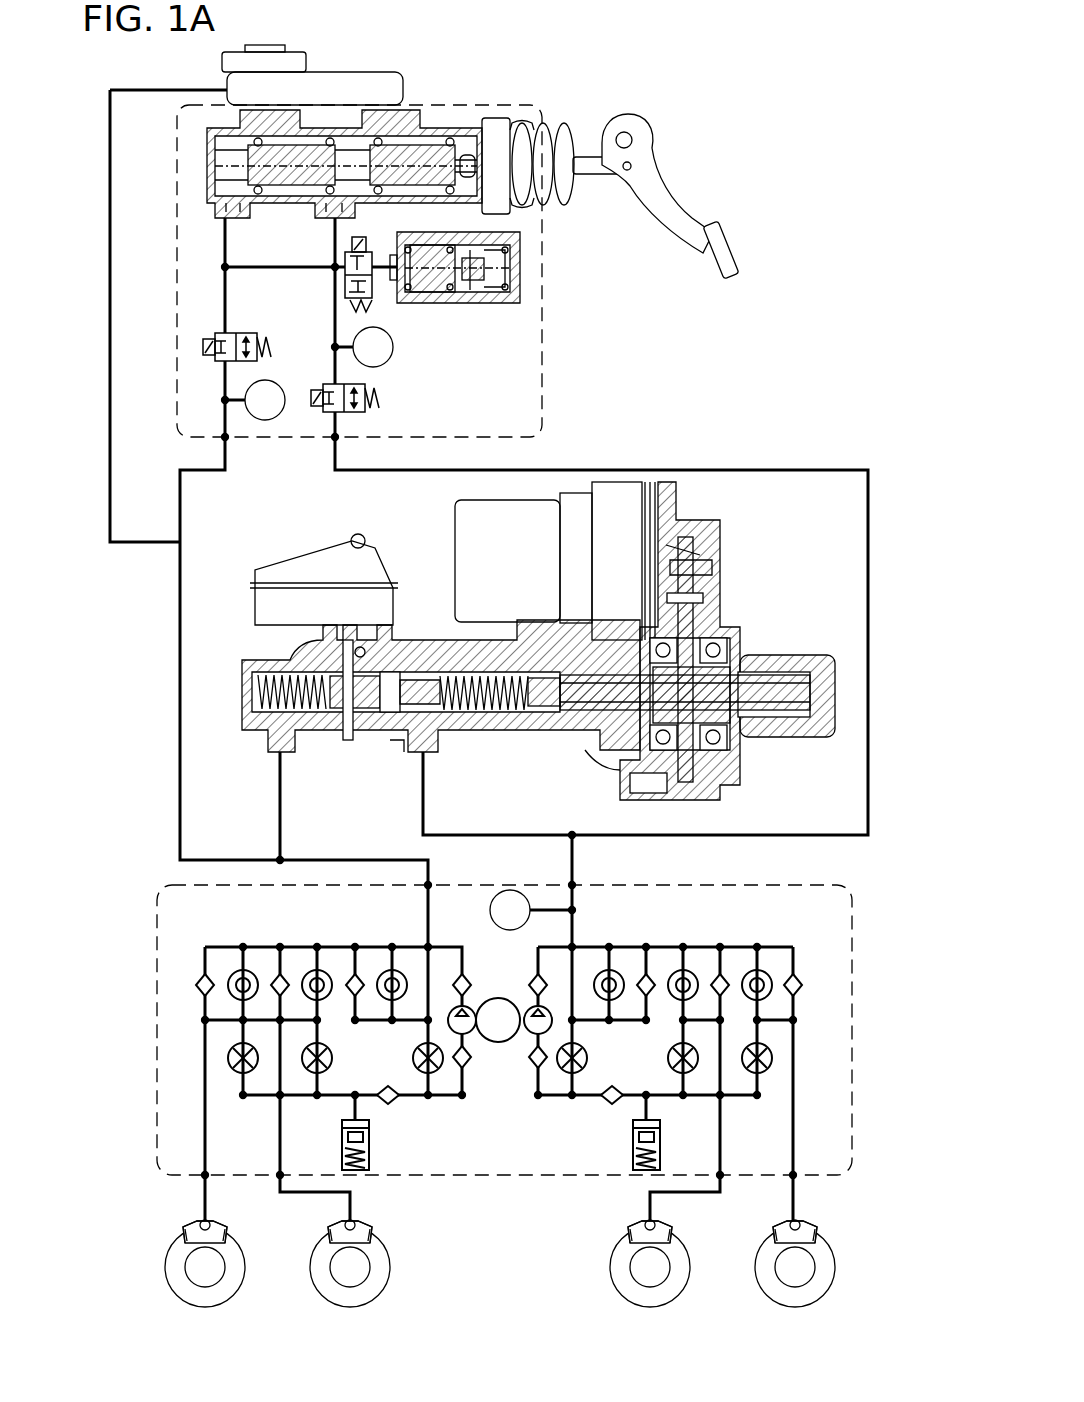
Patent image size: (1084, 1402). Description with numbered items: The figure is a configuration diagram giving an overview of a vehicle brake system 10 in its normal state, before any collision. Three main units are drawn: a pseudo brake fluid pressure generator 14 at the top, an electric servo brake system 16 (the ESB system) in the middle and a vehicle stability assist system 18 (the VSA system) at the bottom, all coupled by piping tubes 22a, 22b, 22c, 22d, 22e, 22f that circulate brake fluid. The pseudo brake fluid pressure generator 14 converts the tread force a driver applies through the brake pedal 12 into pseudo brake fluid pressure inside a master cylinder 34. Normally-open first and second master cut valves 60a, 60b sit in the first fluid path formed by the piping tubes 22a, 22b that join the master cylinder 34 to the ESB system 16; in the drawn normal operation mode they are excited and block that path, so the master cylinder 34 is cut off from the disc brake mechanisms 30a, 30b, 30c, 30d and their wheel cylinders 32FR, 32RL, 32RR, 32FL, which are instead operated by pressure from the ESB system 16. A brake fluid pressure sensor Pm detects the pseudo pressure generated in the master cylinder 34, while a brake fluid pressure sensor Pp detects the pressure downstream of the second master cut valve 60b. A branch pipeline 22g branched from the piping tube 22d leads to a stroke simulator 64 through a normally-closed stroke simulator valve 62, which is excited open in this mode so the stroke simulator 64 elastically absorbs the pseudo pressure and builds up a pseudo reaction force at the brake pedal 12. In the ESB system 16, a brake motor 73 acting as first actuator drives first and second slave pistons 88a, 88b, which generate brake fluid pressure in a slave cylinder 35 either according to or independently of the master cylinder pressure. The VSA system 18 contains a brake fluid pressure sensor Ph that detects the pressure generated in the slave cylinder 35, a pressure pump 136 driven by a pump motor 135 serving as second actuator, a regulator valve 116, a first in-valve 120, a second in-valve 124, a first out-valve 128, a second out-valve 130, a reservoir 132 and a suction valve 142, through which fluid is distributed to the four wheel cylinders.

The vehicle brake system 10 is at (660, 92).
The brake pedal 12 is at (735, 242).
The pseudo brake fluid pressure generator 14 is at (545, 335).
The electric servo brake system 16 is at (714, 520).
The vehicle stability assist system 18 is at (735, 883).
The master cylinder 34 is at (440, 125).
The slave cylinder 35 is at (438, 625).
The brake motor 73 is at (555, 561).
The piping tube 22a is at (333, 330).
The piping tube 22b is at (472, 835).
The piping tube 22c is at (575, 856).
The piping tube 22d is at (222, 302).
The piping tube 22e is at (278, 812).
The piping tube 22f is at (352, 858).
The branch pipeline 22g is at (276, 266).
The first master cut valve 60a is at (367, 398).
The second master cut valve 60b is at (240, 333).
The stroke simulator valve 62 is at (366, 258).
The stroke simulator 64 is at (524, 257).
The first slave piston 88a is at (600, 748).
The second slave piston 88b is at (392, 748).
The brake fluid pressure sensor Pm is at (373, 347).
The brake fluid pressure sensor Pp is at (265, 400).
The brake fluid pressure sensor Ph is at (510, 910).
The regulator valve 116 is at (388, 968).
The first in-valve 120 is at (240, 968).
The second in-valve 124 is at (314, 968).
The first out-valve 128 is at (242, 1075).
The second out-valve 130 is at (334, 1058).
The reservoir 132 is at (370, 1162).
The pump motor 135 is at (498, 998).
The pressure pump 136 is at (532, 1035).
The suction valve 142 is at (432, 1075).
The disc brake mechanism 30a is at (836, 1290).
The disc brake mechanism 30b is at (691, 1290).
The disc brake mechanism 30c is at (391, 1290).
The disc brake mechanism 30d is at (246, 1290).
The wheel cylinder 32FL is at (228, 1240).
The wheel cylinder 32FR is at (818, 1240).
The wheel cylinder 32RL is at (673, 1240).
The wheel cylinder 32RR is at (373, 1240).